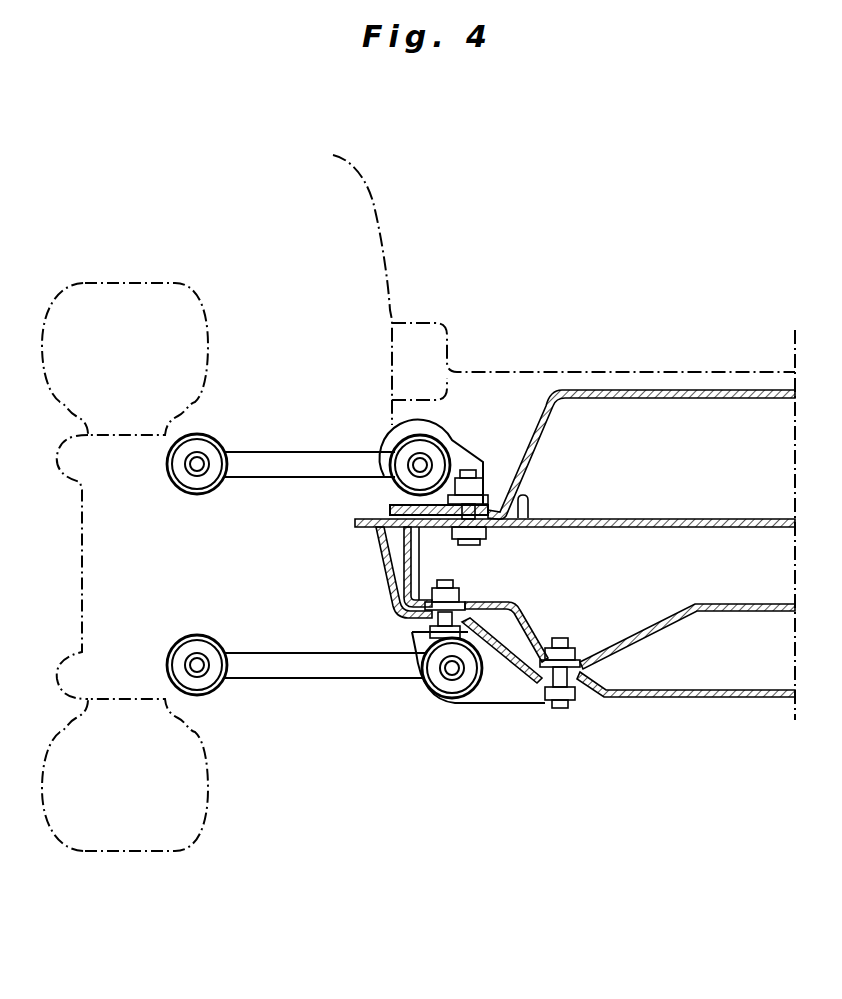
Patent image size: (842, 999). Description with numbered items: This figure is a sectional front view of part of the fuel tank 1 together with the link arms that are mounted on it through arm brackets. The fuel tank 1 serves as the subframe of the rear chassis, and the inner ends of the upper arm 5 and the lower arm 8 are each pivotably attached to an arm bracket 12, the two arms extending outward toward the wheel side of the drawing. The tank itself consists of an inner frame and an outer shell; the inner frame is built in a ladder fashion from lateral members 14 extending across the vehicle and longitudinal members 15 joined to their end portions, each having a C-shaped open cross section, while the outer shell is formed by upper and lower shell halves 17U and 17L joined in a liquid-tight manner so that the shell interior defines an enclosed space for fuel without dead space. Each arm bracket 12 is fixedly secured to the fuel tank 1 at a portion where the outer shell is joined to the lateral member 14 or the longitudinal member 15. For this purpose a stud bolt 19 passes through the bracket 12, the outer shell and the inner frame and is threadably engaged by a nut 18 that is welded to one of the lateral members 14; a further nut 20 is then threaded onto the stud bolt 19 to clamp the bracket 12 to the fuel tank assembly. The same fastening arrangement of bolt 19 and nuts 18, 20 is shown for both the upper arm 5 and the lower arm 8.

The fuel tank 1 is at (623, 426).
The upper arm 5 is at (288, 452).
The lower arm 8 is at (313, 679).
The arm bracket 12 is at (400, 438).
The lateral member 14 is at (720, 520).
The longitudinal member 15 is at (400, 558).
The upper shell half 17U is at (712, 390).
The lower shell half 17L is at (740, 700).
The nut 18 is at (458, 590).
The stud bolt 19 is at (469, 478).
The nut 20 is at (484, 487).